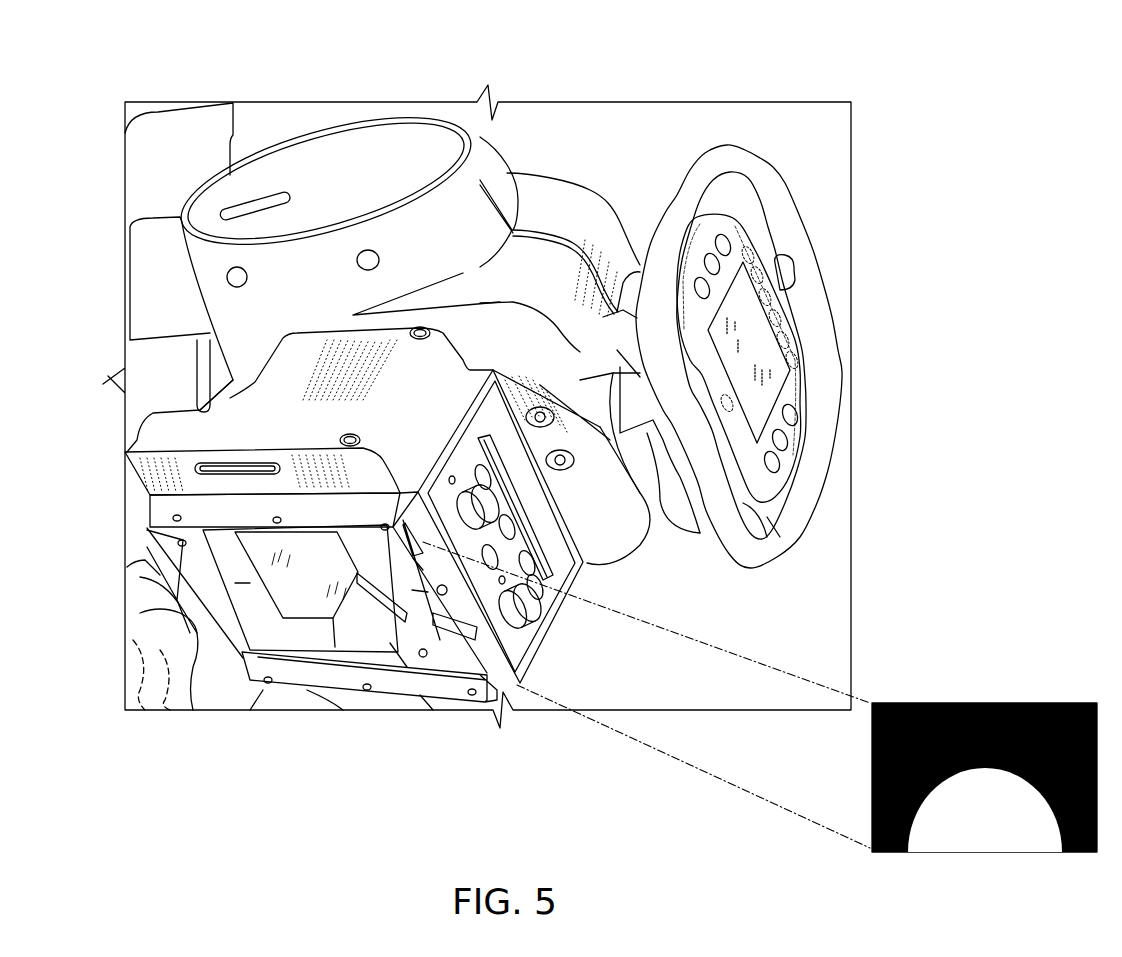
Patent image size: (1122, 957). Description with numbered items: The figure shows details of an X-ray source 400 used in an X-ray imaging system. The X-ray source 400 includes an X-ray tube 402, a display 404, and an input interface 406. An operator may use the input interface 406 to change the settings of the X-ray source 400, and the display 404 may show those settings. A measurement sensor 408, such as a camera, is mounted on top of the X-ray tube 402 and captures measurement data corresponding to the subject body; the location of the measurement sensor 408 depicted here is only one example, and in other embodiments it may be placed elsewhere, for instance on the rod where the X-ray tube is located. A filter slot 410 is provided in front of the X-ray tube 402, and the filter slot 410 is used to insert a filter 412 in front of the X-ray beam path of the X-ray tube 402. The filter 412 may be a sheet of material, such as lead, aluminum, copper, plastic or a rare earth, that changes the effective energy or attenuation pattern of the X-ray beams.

The X-ray source 400 is at (753, 63).
The X-ray tube 402 is at (387, 643).
The display 404 is at (760, 335).
The input interface 406 is at (627, 518).
The measurement sensor 408 is at (183, 470).
The filter slot 410 is at (517, 685).
The filter 412 is at (1030, 703).